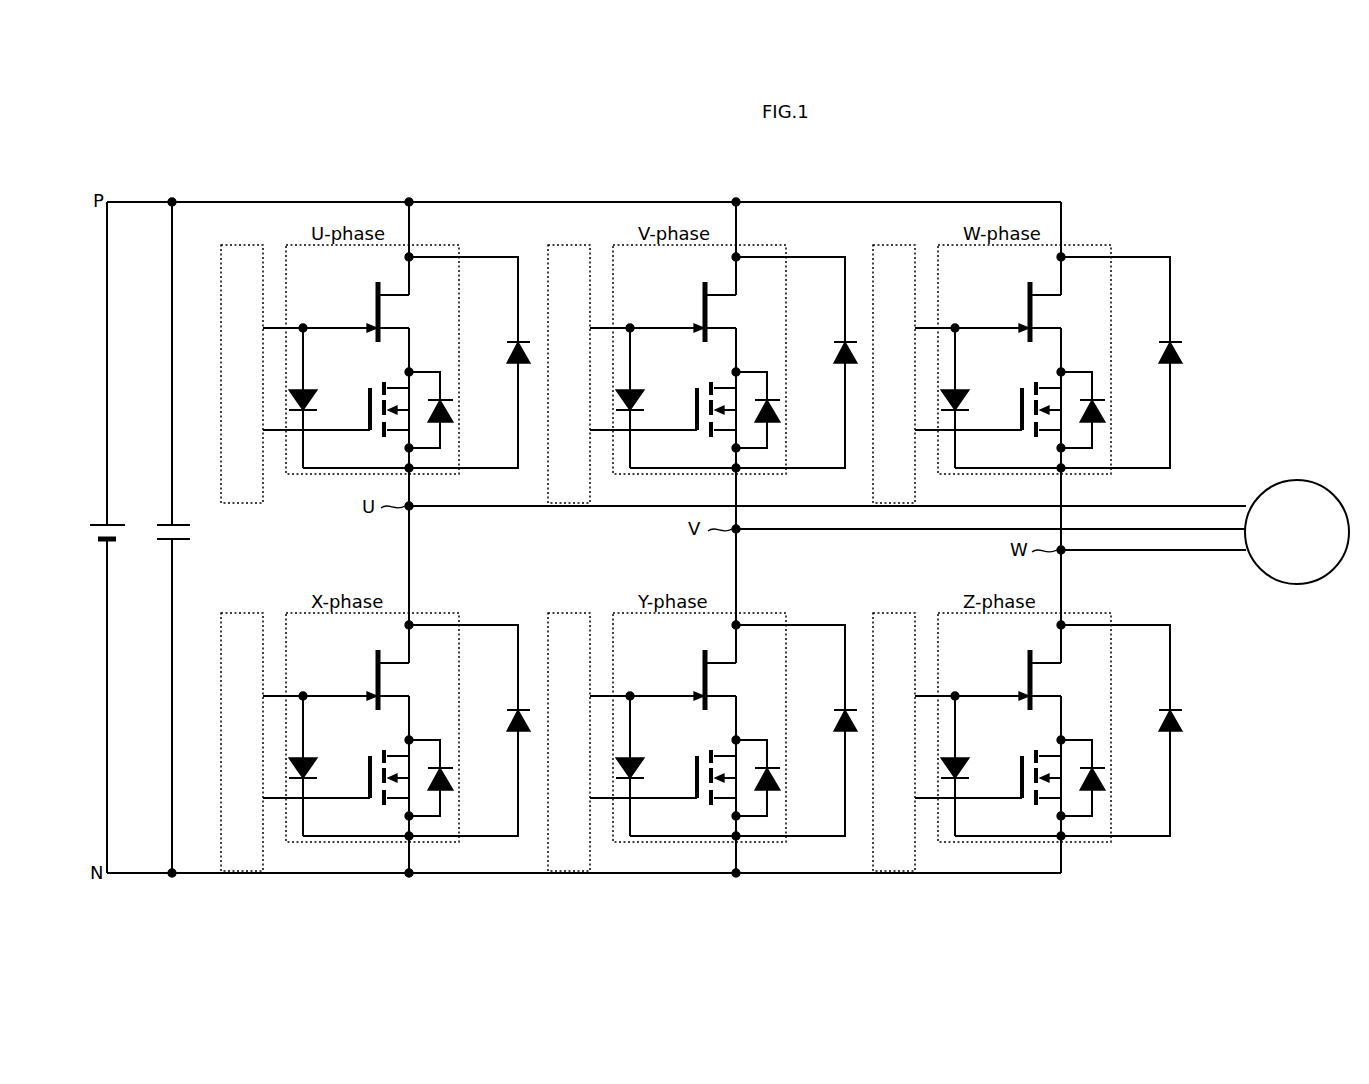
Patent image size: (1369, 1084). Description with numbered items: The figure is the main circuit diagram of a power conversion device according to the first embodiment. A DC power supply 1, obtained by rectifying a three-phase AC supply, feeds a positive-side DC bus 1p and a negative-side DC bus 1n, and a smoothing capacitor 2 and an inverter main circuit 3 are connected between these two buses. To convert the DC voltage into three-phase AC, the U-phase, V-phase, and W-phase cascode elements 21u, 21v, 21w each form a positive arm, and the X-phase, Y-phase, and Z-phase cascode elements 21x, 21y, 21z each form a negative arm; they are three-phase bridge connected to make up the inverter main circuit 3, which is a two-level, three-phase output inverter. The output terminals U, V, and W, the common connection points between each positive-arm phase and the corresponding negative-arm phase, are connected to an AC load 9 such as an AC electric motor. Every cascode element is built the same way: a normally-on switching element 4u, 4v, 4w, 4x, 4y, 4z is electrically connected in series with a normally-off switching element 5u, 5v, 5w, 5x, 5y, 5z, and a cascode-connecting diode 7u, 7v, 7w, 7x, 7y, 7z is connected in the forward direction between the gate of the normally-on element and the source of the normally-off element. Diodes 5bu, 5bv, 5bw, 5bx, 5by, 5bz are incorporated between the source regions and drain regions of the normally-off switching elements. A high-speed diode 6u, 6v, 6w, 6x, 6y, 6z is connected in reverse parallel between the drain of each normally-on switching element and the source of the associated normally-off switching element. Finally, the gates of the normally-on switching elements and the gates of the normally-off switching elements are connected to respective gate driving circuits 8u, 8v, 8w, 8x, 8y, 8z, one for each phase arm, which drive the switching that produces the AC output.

The DC power supply 1 is at (104, 518).
The smoothing capacitor 2 is at (169, 518).
The inverter main circuit 3 is at (676, 186).
The AC load 9 is at (1298, 480).
The positive-side DC bus 1p is at (438, 202).
The negative-side DC bus 1n is at (458, 874).
The normally-on switching element 4u is at (372, 318).
The normally-on switching element 4v is at (663, 312).
The normally-on switching element 4w is at (988, 312).
The normally-on switching element 4x is at (336, 680).
The normally-on switching element 4y is at (663, 680).
The normally-on switching element 4z is at (988, 680).
The normally-off switching element 5u is at (382, 380).
The normally-off switching element 5v is at (663, 389).
The normally-off switching element 5w is at (988, 389).
The normally-off switching element 5x is at (336, 757).
The normally-off switching element 5y is at (663, 757).
The normally-off switching element 5z is at (988, 757).
The diode 5bu is at (454, 410).
The diode 5bv is at (783, 410).
The diode 5bw is at (1110, 410).
The diode 5bx is at (456, 778).
The diode 5by is at (783, 778).
The diode 5bz is at (1107, 778).
The high-speed diode 6u is at (512, 355).
The high-speed diode 6v is at (830, 339).
The high-speed diode 6w is at (1155, 339).
The high-speed diode 6x is at (503, 707).
The high-speed diode 6y is at (830, 707).
The high-speed diode 6z is at (1155, 707).
The cascode-connecting diode 7u is at (318, 402).
The cascode-connecting diode 7v is at (653, 396).
The cascode-connecting diode 7w is at (980, 396).
The cascode-connecting diode 7x is at (326, 764).
The cascode-connecting diode 7y is at (653, 764).
The cascode-connecting diode 7z is at (978, 764).
The gate driving circuit 8u is at (240, 246).
The gate driving circuit 8v is at (576, 356).
The gate driving circuit 8w is at (903, 356).
The gate driving circuit 8x is at (249, 724).
The gate driving circuit 8y is at (576, 724).
The gate driving circuit 8z is at (901, 724).
The cascode element 21u is at (427, 246).
The cascode element 21v is at (709, 345).
The cascode element 21w is at (1036, 345).
The cascode element 21x is at (382, 713).
The cascode element 21y is at (709, 713).
The cascode element 21z is at (1033, 713).